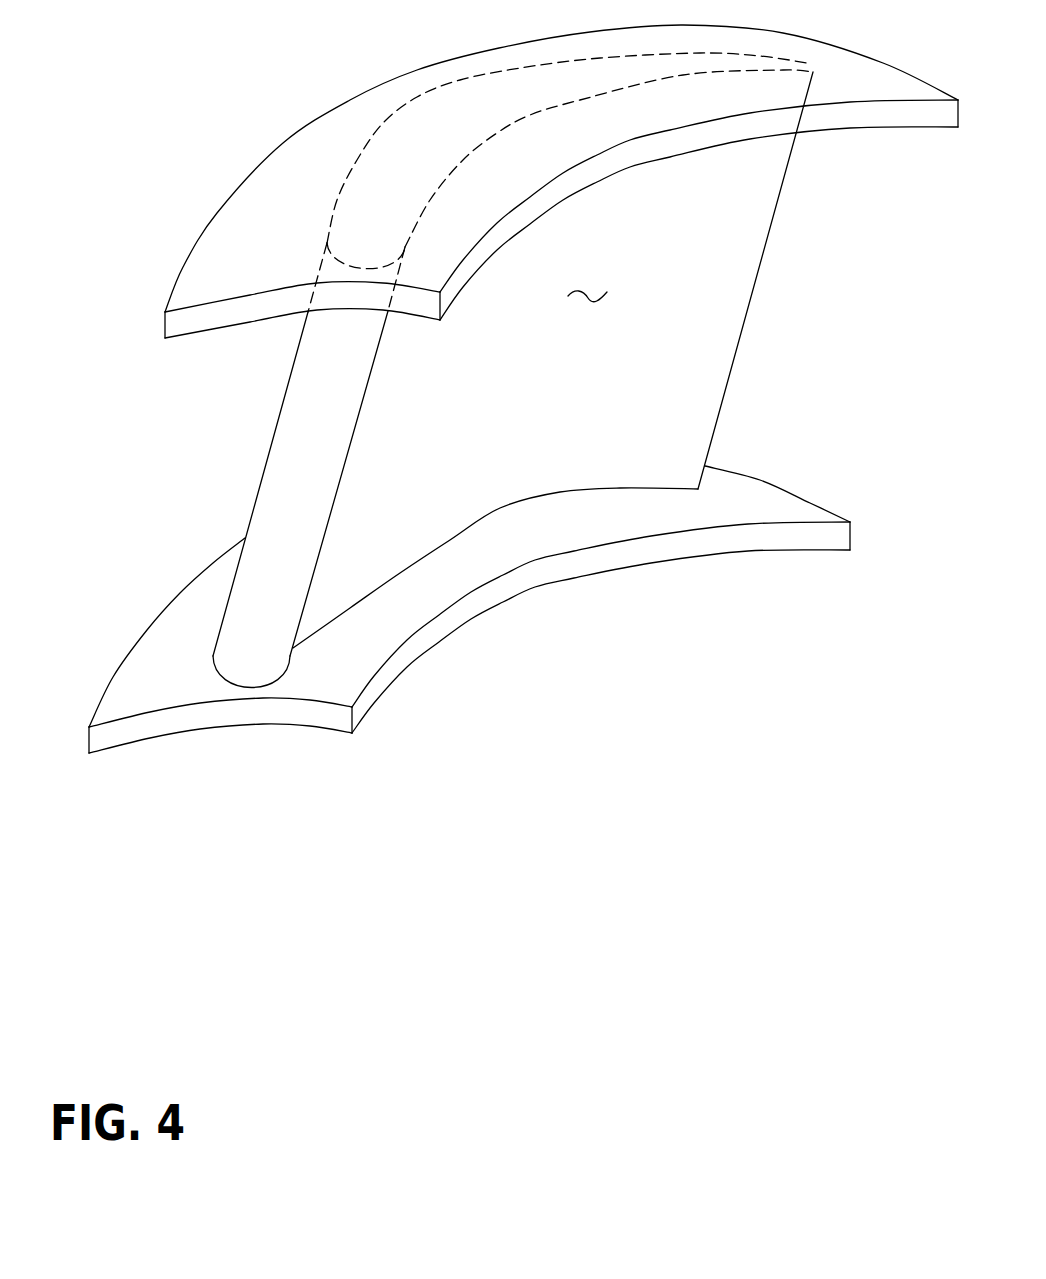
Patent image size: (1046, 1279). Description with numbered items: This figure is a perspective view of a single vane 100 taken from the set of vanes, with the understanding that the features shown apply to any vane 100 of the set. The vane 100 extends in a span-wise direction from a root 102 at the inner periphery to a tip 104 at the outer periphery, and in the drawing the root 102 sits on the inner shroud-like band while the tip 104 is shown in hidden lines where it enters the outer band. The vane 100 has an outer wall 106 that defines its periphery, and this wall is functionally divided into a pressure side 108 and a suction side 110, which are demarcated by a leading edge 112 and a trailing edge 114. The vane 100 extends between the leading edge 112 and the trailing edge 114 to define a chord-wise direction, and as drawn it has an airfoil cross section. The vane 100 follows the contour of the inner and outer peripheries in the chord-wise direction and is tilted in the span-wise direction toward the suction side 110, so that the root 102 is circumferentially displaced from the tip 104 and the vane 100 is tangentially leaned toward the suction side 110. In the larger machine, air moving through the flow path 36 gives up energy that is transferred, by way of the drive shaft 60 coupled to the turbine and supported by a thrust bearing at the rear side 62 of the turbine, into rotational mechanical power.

The flow path 36 is at (70, 91).
The drive shaft 60 is at (283, 699).
The rear side 62 is at (760, 140).
The vane 100 is at (495, 369).
The root 102 is at (293, 650).
The tip 104 is at (470, 83).
The outer wall 106 is at (593, 290).
The pressure side 108 is at (752, 433).
The suction side 110 is at (251, 517).
The leading edge 112 is at (365, 393).
The trailing edge 114 is at (740, 337).